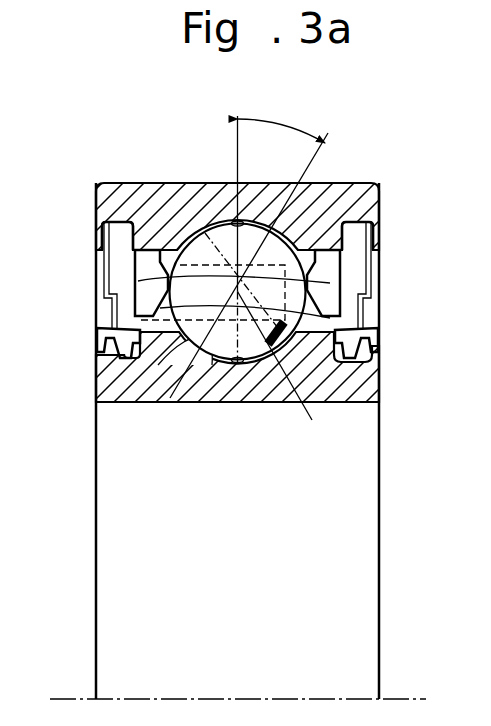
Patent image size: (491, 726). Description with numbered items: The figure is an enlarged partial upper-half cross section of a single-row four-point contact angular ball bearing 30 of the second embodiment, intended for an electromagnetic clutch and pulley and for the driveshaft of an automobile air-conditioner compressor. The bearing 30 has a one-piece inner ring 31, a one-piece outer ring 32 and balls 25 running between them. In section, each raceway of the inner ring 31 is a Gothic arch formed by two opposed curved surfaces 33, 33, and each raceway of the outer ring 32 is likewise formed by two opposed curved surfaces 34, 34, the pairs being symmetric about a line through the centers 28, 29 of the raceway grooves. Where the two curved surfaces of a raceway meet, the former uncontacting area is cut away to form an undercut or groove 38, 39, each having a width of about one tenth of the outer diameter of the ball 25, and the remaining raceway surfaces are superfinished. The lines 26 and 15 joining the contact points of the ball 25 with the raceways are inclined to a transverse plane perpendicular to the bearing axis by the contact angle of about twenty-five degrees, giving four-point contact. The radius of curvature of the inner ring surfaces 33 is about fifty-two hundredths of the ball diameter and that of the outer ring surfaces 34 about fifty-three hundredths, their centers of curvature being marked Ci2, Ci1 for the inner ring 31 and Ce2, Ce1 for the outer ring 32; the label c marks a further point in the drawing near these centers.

The single-row four-point contact angular ball bearing 30 is at (386, 175).
The outer ring 32 is at (381, 206).
The inner ring 31 is at (380, 384).
The line joining contact points 15 is at (312, 420).
The ball 25 is at (105, 374).
The line joining contact points 26 is at (173, 397).
The curved surface of inner ring raceway 33 is at (365, 320).
The curved surface of outer ring raceway 34 is at (192, 240).
The undercut or groove 38 is at (224, 226).
The center of raceway groove 28 is at (245, 226).
The undercut or groove 39 is at (234, 365).
The center of raceway groove 29 is at (240, 365).
The center of curvature of inner ring curved surface Ci1 is at (330, 263).
The center of curvature of outer ring curved surface Ce1 is at (240, 298).
The center of curvature of inner ring curved surface Ci2 is at (180, 265).
The clearance c is at (235, 298).
The center of curvature of outer ring curved surface Ce2 is at (104, 337).